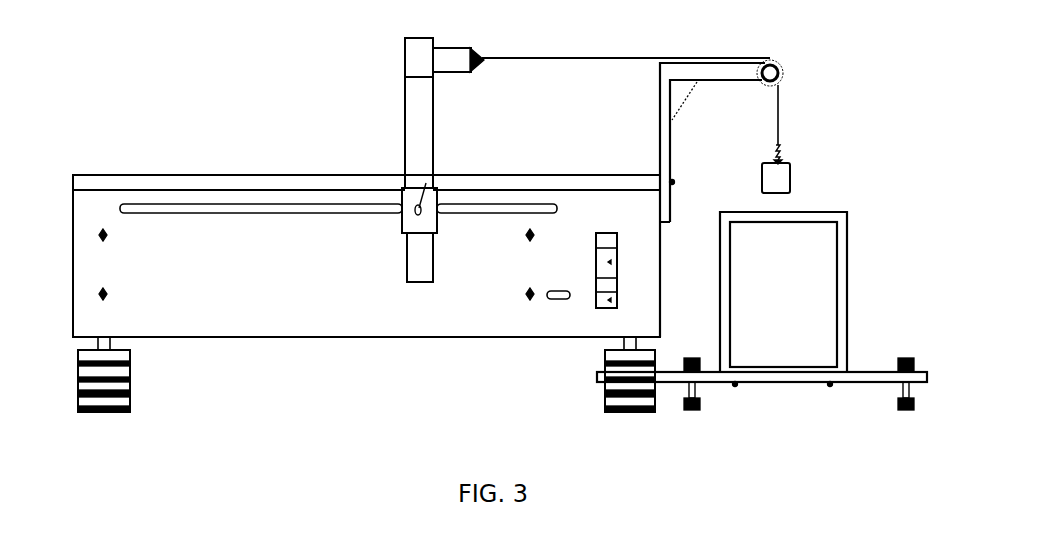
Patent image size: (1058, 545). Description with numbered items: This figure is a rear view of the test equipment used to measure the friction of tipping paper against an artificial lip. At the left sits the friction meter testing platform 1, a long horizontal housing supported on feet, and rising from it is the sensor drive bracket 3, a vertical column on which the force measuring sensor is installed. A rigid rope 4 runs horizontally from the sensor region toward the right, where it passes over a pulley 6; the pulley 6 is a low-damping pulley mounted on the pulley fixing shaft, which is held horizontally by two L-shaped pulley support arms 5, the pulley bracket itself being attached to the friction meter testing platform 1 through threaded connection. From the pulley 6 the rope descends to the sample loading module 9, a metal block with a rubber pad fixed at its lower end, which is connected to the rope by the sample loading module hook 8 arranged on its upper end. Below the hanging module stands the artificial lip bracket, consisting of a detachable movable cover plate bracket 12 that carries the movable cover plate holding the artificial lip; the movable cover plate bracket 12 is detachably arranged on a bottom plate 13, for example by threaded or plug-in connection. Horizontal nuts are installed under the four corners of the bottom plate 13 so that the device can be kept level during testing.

The friction meter testing platform 1 is at (326, 268).
The sensor drive bracket 3 is at (418, 58).
The rigid rope 4 is at (590, 56).
The L-shaped pulley support arm 5 is at (660, 187).
The pulley 6 is at (784, 72).
The sample loading module hook 8 is at (780, 145).
The sample loading module 9 is at (782, 182).
The movable cover plate bracket 12 is at (793, 368).
The bottom plate 13 is at (870, 373).